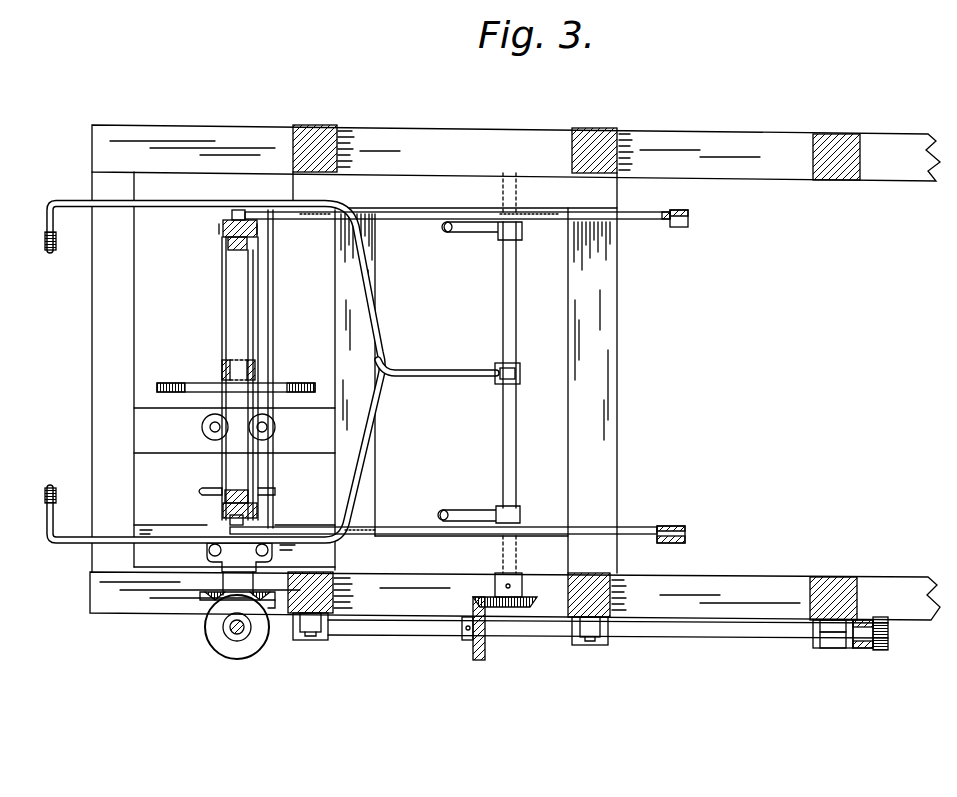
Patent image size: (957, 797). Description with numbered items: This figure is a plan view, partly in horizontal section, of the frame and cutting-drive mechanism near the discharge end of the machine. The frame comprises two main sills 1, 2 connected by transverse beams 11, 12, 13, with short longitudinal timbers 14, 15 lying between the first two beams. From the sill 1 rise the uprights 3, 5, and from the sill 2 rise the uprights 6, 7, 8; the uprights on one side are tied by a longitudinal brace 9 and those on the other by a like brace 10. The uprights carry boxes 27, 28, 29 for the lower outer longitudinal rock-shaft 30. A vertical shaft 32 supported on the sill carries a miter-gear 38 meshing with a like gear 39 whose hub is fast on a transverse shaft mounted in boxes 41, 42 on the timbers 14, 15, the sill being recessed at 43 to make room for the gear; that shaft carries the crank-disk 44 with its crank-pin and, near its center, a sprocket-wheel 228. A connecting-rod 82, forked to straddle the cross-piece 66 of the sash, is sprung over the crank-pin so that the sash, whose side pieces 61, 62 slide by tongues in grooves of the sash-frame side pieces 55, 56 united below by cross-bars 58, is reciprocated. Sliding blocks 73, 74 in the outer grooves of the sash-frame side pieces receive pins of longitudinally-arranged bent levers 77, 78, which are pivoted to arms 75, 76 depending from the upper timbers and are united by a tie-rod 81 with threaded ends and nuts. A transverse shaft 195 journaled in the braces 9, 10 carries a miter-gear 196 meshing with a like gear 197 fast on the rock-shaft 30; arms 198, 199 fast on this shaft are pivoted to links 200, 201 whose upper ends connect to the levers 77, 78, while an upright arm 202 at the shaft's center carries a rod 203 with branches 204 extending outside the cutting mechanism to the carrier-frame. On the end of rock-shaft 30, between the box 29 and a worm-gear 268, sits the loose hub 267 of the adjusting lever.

The sill 1 is at (515, 596).
The sill 2 is at (239, 138).
The upright 3 is at (449, 594).
The upright 5 is at (833, 598).
The upright 6 is at (315, 148).
The upright 7 is at (594, 150).
The upright 8 is at (836, 157).
The longitudinal brace 9 is at (471, 550).
The longitudinal brace 10 is at (455, 190).
The transverse beam 11 is at (113, 372).
The transverse beam 12 is at (335, 330).
The transverse beam 13 is at (570, 357).
The short longitudinal timber 14 is at (145, 528).
The short longitudinal timber 15 is at (234, 430).
The box 27 is at (313, 642).
The box 28 is at (598, 641).
The box 29 is at (838, 630).
The rock-shaft 30 is at (426, 640).
The vertical shaft 32 is at (234, 635).
The miter-gear 38 is at (206, 630).
The miter-gear 39 is at (200, 603).
The box 41 is at (239, 557).
The box 42 is at (202, 427).
The recess 43 is at (272, 610).
The crank-disk 44 is at (178, 375).
The side piece of sash-frame 55 is at (222, 512).
The side piece of sash-frame 56 is at (222, 232).
The cross-bar 58 is at (259, 284).
The side piece of sash 61 is at (252, 490).
The side piece of sash 62 is at (221, 378).
The cross-piece 66 is at (222, 282).
The sliding block 73 is at (258, 516).
The sliding block 74 is at (232, 214).
The arm 75 is at (672, 544).
The arm 76 is at (686, 213).
The bent lever 77 is at (634, 527).
The bent lever 78 is at (640, 219).
The tie-rod 81 is at (274, 318).
The connecting-rod 82 is at (222, 366).
The transverse shaft 195 is at (517, 475).
The miter-gear 196 is at (550, 596).
The miter-gear 197 is at (475, 605).
The arm 198 is at (463, 512).
The arm 199 is at (476, 240).
The link 200 is at (438, 517).
The link 201 is at (443, 231).
The upright arm 202 is at (522, 375).
The rod 203 is at (437, 378).
The branch 204 is at (108, 205).
The sprocket-wheel 228 is at (229, 479).
The hub 267 is at (866, 648).
The worm-gear 268 is at (889, 652).